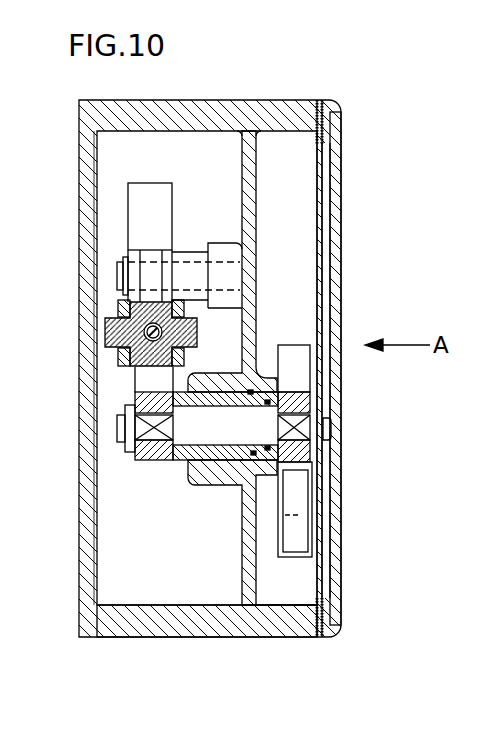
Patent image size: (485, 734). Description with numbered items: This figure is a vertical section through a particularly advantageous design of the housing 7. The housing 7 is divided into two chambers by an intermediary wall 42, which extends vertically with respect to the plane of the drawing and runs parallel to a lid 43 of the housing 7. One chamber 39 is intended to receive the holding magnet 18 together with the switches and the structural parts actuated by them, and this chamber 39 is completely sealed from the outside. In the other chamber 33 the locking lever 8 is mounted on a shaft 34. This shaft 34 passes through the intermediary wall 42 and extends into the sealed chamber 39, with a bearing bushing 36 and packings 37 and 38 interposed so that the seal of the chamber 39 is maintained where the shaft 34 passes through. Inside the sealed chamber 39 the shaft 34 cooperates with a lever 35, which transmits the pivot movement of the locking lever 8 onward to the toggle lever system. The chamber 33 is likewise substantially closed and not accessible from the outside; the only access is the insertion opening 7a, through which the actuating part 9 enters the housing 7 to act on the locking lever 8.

The housing 7 is at (255, 617).
The insertion opening 7a is at (300, 558).
The locking lever 8 is at (296, 355).
The actuating part 9 is at (297, 542).
The holding magnet 18 is at (122, 378).
The chamber 33 is at (293, 590).
The shaft 34 is at (205, 435).
The lever 35 is at (148, 462).
The bearing bushing 36 is at (232, 482).
The packing 37 is at (255, 462).
The packing 38 is at (270, 450).
The chamber 39 is at (130, 582).
The intermediary wall 42 is at (250, 177).
The lid 43 is at (337, 320).